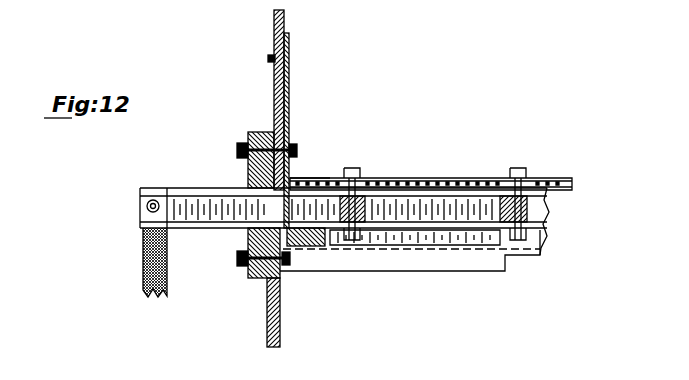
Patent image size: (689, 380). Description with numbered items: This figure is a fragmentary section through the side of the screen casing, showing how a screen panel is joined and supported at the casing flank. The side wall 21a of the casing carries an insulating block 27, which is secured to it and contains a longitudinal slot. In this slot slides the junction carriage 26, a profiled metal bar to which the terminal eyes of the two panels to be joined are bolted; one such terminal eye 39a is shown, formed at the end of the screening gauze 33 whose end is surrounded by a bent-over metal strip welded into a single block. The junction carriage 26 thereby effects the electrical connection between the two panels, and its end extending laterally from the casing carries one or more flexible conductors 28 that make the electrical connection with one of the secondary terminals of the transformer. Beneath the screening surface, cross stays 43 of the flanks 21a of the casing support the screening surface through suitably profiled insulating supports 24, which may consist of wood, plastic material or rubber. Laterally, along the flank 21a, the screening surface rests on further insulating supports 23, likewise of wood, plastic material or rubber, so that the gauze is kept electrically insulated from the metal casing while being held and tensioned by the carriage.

The side wall 21a is at (274, 80).
The insulating block 27 is at (248, 167).
The junction carriage 26 is at (207, 212).
The flexible conductors 28 is at (143, 258).
The insulating supports 23 is at (305, 244).
The insulating supports 24 is at (424, 241).
The cross stays 43 is at (478, 262).
The screening gauze 33 is at (478, 180).
The terminal eye 39a is at (390, 184).